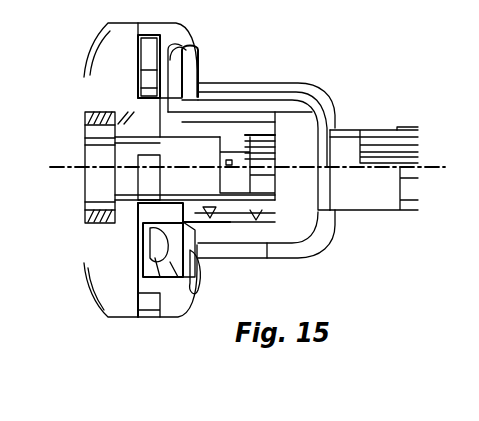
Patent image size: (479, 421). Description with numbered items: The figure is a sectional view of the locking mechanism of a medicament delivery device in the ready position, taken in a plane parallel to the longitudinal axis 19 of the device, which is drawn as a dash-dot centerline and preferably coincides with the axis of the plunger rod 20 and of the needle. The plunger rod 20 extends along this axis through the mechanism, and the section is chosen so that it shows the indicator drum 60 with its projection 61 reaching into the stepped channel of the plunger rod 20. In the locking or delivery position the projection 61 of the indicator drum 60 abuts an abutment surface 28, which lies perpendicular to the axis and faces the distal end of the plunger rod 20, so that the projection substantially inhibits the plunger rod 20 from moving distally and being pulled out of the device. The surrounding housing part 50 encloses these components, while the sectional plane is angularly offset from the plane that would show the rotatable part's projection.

The longitudinal axis 19 is at (440, 167).
The plunger rod 20 is at (353, 197).
The abutment surface 28 is at (218, 157).
The ring housing 50 is at (312, 105).
The indicator drum 60 is at (203, 125).
The projection 61 is at (235, 151).